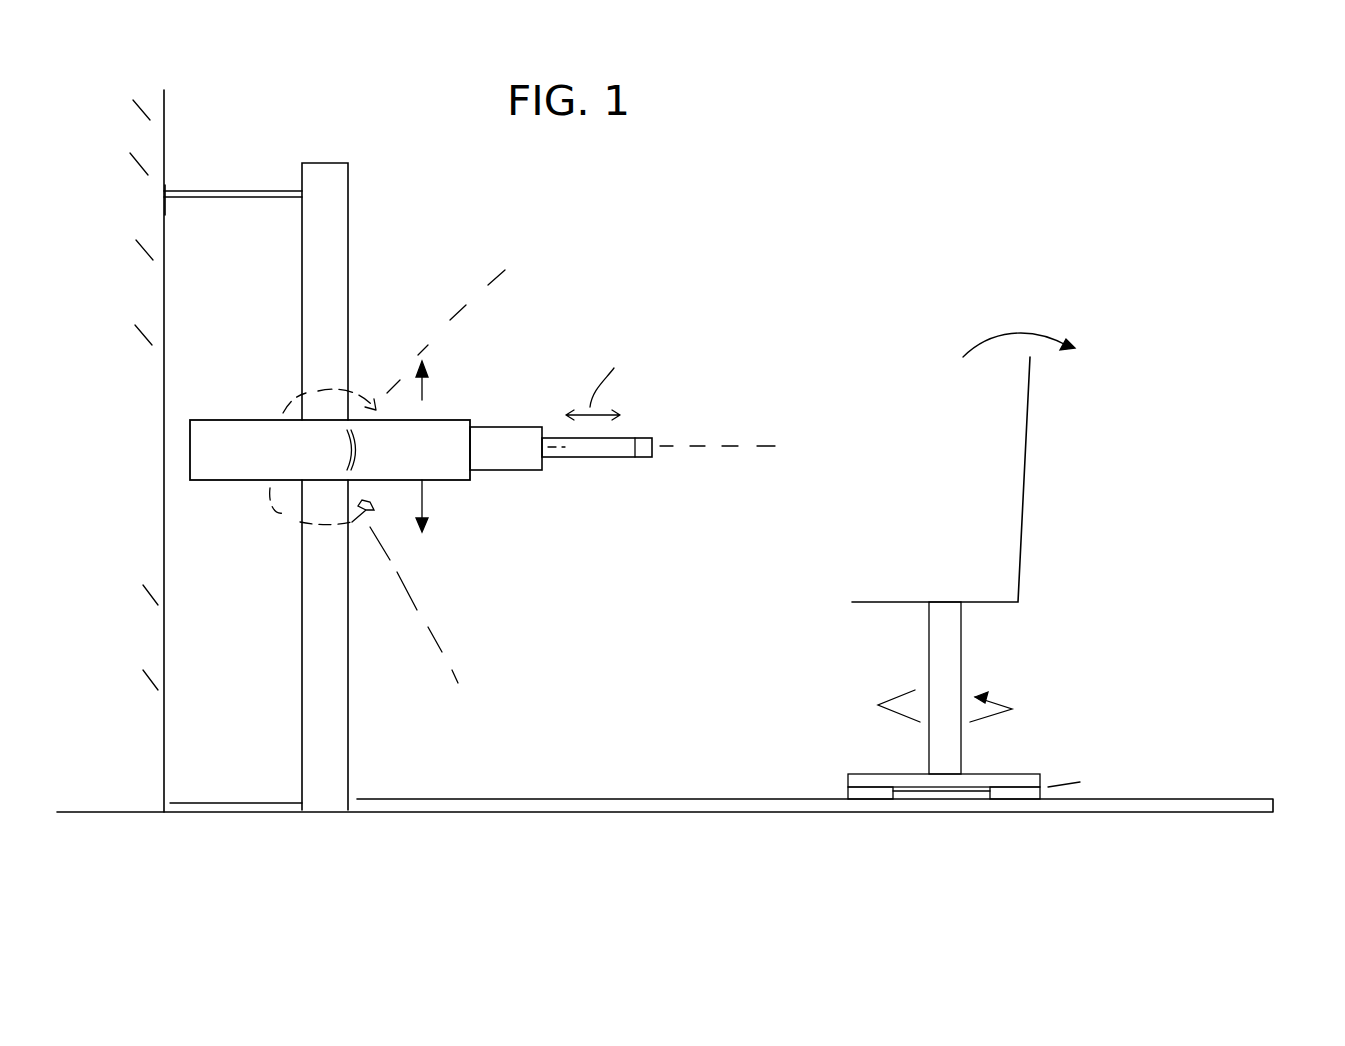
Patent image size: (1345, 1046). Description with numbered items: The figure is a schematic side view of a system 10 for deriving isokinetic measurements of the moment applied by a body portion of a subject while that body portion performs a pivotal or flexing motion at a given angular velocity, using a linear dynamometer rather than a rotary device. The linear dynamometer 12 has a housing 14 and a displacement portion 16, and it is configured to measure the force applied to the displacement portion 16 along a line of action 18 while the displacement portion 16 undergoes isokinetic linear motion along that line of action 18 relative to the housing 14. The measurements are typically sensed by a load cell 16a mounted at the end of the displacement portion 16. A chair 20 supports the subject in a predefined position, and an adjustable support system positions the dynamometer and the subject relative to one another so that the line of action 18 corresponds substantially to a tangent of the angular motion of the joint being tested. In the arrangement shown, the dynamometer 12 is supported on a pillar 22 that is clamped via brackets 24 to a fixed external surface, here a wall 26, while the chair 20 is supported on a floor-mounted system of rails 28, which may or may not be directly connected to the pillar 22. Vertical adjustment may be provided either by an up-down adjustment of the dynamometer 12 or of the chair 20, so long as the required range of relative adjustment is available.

The system 10 is at (794, 175).
The linear dynamometer 12 is at (491, 376).
The housing 14 is at (446, 483).
The displacement portion 16 is at (610, 457).
The load cell 16a is at (645, 458).
The line of action 18 is at (728, 445).
The chair 20 is at (1025, 485).
The pillar 22 is at (346, 252).
The brackets 24 is at (270, 190).
The wall 26 is at (157, 556).
The rails 28 is at (840, 792).